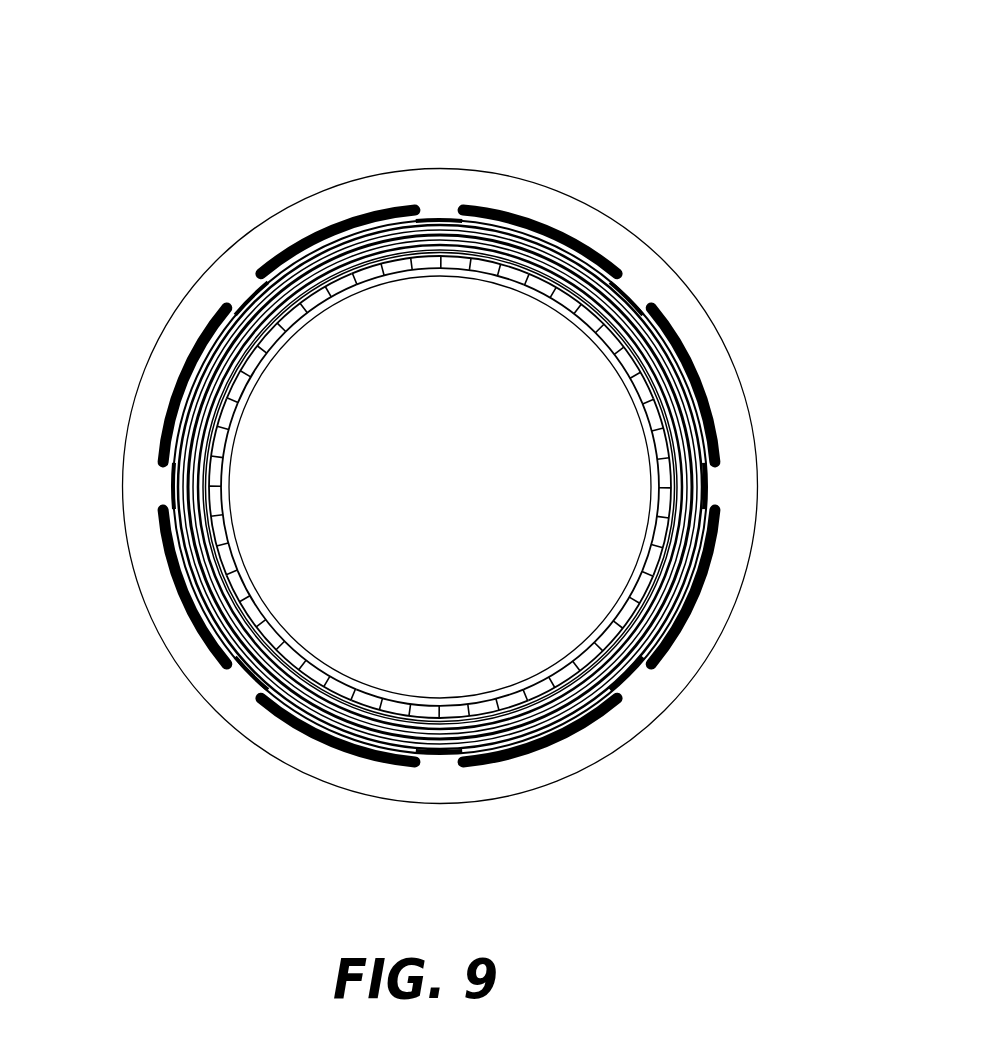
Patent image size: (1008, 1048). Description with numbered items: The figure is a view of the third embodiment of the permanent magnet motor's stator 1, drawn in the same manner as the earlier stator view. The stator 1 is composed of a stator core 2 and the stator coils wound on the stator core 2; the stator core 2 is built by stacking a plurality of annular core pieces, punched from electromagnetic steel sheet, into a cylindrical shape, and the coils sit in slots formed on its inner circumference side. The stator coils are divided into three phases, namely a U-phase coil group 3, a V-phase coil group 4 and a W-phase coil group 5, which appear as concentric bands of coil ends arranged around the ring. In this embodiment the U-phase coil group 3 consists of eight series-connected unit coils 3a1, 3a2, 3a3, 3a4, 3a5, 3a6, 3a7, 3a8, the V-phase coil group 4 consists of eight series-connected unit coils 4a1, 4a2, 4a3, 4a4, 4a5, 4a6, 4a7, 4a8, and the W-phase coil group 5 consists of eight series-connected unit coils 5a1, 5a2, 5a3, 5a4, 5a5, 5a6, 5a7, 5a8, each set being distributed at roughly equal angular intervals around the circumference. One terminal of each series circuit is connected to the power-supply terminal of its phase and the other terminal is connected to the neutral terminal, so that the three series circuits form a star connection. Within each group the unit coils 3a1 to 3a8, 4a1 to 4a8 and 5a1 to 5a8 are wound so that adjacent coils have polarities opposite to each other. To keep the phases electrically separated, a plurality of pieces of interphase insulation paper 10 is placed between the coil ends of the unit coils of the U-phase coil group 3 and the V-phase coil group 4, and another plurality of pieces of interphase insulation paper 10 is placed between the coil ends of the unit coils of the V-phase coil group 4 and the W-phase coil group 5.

The stator 1 is at (582, 113).
The stator core 2 is at (486, 192).
The U-phase coil group 3 is at (545, 225).
The unit coil 3a1 is at (197, 346).
The unit coil 3a2 is at (337, 226).
The unit coil 3a3 is at (580, 256).
The unit coil 3a4 is at (674, 331).
The unit coil 3a5 is at (692, 643).
The unit coil 3a6 is at (557, 761).
The unit coil 3a7 is at (337, 751).
The unit coil 3a8 is at (167, 509).
The V-phase coil group 4 is at (687, 357).
The unit coil 4a1 is at (250, 294).
The unit coil 4a2 is at (440, 218).
The unit coil 4a3 is at (635, 286).
The unit coil 4a4 is at (712, 421).
The unit coil 4a5 is at (634, 691).
The unit coil 4a6 is at (437, 761).
The unit coil 4a7 is at (252, 679).
The unit coil 4a8 is at (215, 481).
The W-phase coil group 5 is at (598, 637).
The unit coil 5a1 is at (453, 262).
The unit coil 5a2 is at (591, 328).
The unit coil 5a3 is at (658, 470).
The unit coil 5a4 is at (648, 577).
The unit coil 5a5 is at (476, 700).
The unit coil 5a6 is at (338, 690).
The unit coil 5a7 is at (241, 560).
The unit coil 5a8 is at (263, 365).
The interphase insulation paper 10 is at (565, 262).